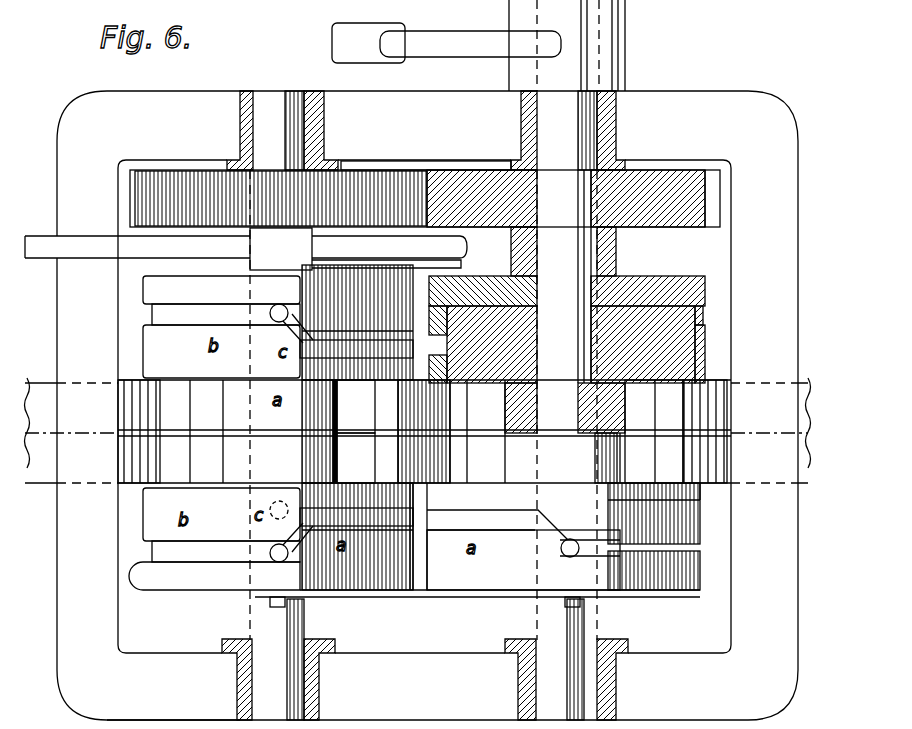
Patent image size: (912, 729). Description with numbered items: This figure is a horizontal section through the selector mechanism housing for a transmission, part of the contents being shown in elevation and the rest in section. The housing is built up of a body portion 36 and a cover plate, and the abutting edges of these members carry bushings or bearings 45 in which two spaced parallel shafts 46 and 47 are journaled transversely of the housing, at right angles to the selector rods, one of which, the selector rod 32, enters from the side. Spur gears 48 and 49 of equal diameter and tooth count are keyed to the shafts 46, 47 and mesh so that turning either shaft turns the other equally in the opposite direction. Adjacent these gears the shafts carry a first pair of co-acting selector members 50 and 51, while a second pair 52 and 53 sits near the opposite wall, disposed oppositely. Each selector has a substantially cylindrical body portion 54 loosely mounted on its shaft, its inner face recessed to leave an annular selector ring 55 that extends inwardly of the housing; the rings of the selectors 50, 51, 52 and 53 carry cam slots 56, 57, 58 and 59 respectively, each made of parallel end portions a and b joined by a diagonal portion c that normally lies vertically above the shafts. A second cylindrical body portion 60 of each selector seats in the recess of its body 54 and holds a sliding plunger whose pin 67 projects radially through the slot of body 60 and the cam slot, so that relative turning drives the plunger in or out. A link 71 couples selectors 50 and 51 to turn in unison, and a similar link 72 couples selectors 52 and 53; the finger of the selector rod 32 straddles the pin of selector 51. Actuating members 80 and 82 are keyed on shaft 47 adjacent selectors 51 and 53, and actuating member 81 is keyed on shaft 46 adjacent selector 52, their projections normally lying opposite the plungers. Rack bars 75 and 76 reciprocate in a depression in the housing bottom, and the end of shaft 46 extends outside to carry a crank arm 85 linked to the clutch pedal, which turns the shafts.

The selector rod 32 is at (92, 232).
The body portion 36 is at (173, 700).
The bushings or bearings 45 is at (240, 112).
The shaft 46 is at (567, 360).
The shaft 47 is at (272, 90).
The spur gear 48 is at (645, 178).
The spur gear 49 is at (380, 180).
The selector member 50 is at (683, 276).
The selector member 51 is at (221, 300).
The selector member 52 is at (490, 594).
The selector member 53 is at (378, 594).
The body portion 54 is at (503, 272).
The selector ring 55 is at (706, 340).
The cam slot 56 is at (703, 310).
The cam slot 57 is at (221, 351).
The cam slot 58 is at (656, 590).
The cam slot 59 is at (152, 590).
The second cylindrical body portion 60 is at (615, 292).
The pin 67 is at (283, 299).
The link 71 is at (388, 258).
The link 72 is at (428, 594).
The rack bar 75 is at (728, 406).
The rack bar 76 is at (705, 488).
The actuating member 80 is at (356, 406).
The actuating member 81 is at (620, 458).
The actuating member 82 is at (356, 458).
The crank arm 85 is at (463, 42).